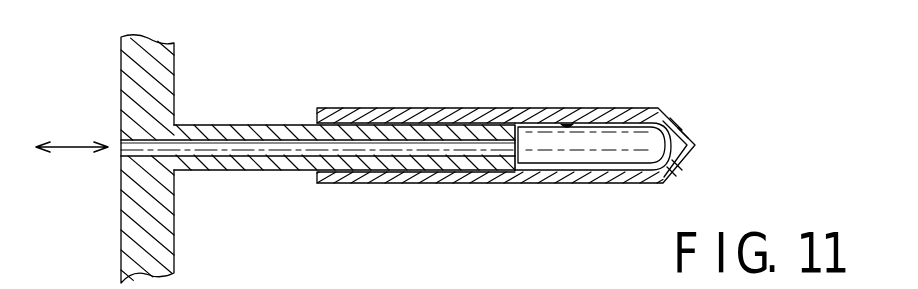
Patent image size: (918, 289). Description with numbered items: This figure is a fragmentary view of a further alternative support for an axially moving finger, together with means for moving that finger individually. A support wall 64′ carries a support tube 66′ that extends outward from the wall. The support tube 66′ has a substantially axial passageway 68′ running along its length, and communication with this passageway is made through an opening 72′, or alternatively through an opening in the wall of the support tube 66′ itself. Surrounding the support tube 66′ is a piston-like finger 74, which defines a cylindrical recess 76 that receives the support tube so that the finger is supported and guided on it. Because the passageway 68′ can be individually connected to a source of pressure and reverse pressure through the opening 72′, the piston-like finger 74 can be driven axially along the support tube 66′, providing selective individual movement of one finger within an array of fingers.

The support wall 64′ is at (174, 68).
The support tube 66′ is at (238, 125).
The axial passageway 68′ is at (277, 170).
The opening 72′ is at (118, 151).
The piston-like finger 74 is at (582, 109).
The cylindrical recess 76 is at (567, 126).